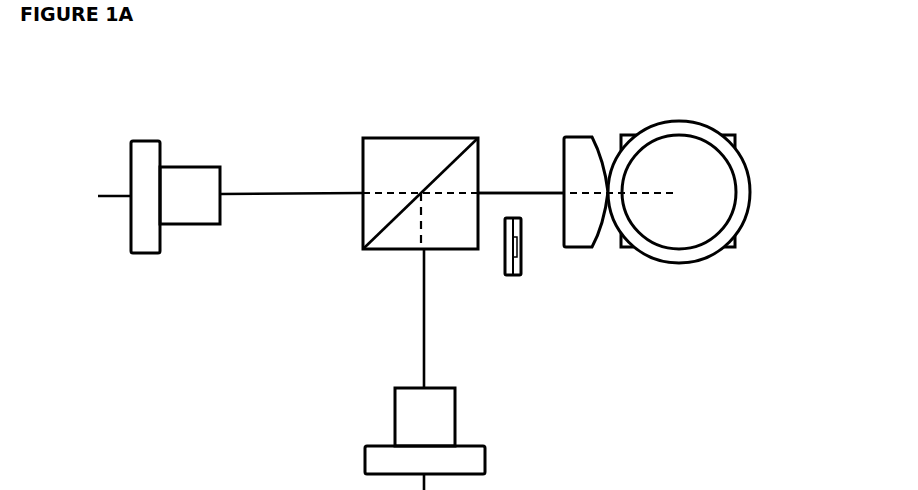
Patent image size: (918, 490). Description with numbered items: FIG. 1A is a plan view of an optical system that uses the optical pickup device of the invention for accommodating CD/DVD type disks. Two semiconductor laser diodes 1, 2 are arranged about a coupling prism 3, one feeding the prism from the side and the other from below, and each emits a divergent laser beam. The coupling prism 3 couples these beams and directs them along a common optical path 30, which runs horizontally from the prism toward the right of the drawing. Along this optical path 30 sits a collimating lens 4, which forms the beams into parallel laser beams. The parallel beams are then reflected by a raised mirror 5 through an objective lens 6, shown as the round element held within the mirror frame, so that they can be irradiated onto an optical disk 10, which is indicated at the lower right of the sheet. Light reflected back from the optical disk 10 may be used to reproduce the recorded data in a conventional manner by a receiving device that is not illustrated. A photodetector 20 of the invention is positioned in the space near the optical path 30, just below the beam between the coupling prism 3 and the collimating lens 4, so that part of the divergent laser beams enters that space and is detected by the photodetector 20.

The semiconductor laser diode 1 is at (145, 253).
The semiconductor laser diode 2 is at (485, 457).
The coupling prism 3 is at (403, 138).
The collimating lens 4 is at (576, 137).
The raised mirror 5 is at (735, 240).
The objective lens 6 is at (737, 203).
The optical disk 10 is at (772, 488).
The photodetector 20 is at (521, 268).
The optical path 30 is at (500, 193).